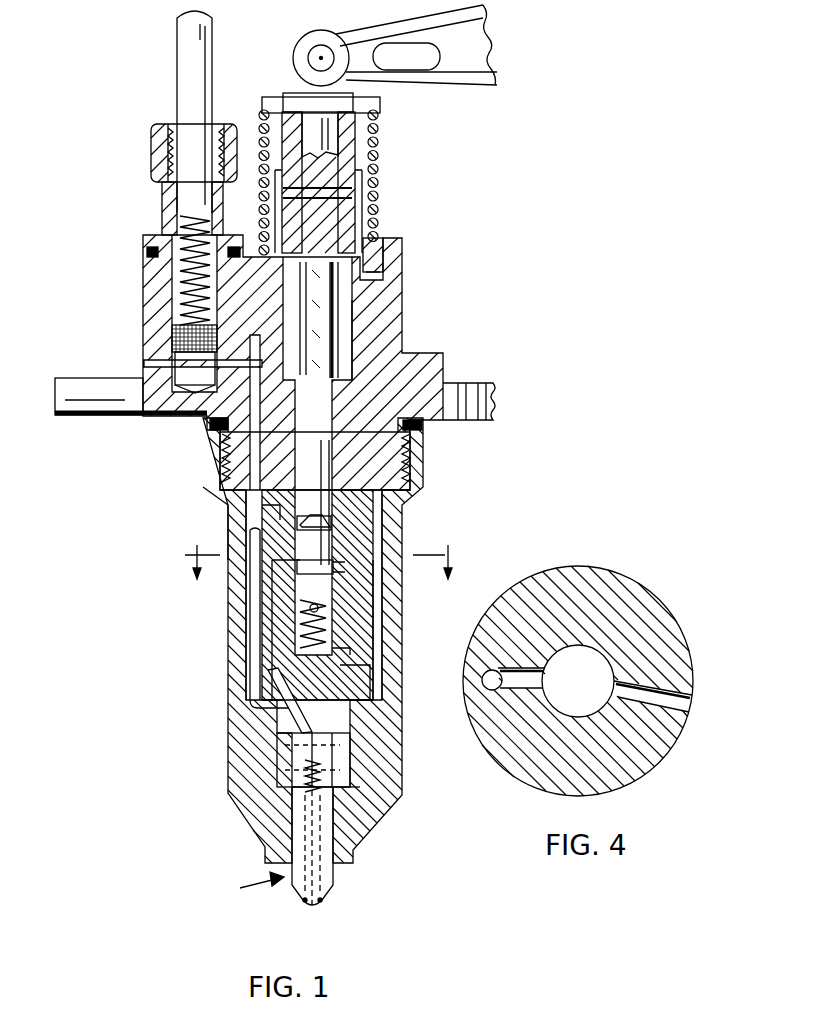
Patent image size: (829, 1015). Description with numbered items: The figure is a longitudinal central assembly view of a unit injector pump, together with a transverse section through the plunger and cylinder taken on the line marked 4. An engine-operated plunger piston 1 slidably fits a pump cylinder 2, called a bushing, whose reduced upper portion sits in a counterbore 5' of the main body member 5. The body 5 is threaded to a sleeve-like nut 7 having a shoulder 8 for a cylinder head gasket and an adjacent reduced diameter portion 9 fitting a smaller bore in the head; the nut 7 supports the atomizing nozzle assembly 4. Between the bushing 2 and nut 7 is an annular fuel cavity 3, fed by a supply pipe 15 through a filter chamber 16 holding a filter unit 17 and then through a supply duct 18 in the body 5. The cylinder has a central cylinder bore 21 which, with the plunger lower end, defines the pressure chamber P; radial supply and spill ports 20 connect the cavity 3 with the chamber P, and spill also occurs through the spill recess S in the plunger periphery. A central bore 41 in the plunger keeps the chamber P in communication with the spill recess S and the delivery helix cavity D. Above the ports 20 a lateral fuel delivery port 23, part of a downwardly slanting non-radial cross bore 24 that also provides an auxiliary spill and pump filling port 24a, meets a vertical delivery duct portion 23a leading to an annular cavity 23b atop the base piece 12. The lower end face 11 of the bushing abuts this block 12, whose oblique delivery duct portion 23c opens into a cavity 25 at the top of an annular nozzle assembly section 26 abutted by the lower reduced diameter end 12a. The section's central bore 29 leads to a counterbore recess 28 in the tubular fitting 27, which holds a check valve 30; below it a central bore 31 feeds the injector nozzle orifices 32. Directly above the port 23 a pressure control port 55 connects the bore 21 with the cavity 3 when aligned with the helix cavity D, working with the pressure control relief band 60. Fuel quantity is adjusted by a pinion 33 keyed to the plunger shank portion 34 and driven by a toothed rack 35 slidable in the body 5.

In FIG. 1, the plunger piston 1 is at (318, 466).
In FIG. 1, the pump cylinder 2 is at (262, 612).
In FIG. 4, the pump cylinder 2 is at (635, 600).
In FIG. 1, the fuel cavity 3 is at (258, 525).
In FIG. 1, the atomizing nozzle assembly 4 is at (316, 722).
In FIG. 1, the main body member 5 is at (308, 362).
In FIG. 1, the counterbore 5' is at (404, 465).
In FIG. 1, the sleeve-like nut 7 is at (213, 465).
In FIG. 1, the shoulder 8 is at (232, 492).
In FIG. 1, the reduced diameter portion 9 is at (238, 540).
In FIG. 1, the lower end face 11 is at (382, 681).
In FIG. 1, the base piece 12 is at (272, 686).
In FIG. 1, the lower reduced diameter end 12a is at (348, 723).
In FIG. 1, the supply pipe 15 is at (190, 75).
In FIG. 1, the filter chamber 16 is at (166, 323).
In FIG. 1, the filter unit 17 is at (172, 342).
In FIG. 1, the supply duct 18 is at (252, 393).
In FIG. 1, the radial supply and spill ports 20 is at (314, 629).
In FIG. 1, the central cylinder bore 21 is at (362, 651).
In FIG. 4, the central cylinder bore 21 is at (562, 716).
In FIG. 1, the lateral fuel delivery port 23 is at (285, 560).
In FIG. 4, the lateral fuel delivery port 23 is at (540, 684).
In FIG. 1, the vertical delivery duct portion 23a is at (272, 622).
In FIG. 4, the vertical delivery duct portion 23a is at (490, 683).
In FIG. 1, the annular cavity 23b is at (300, 661).
In FIG. 1, the oblique delivery duct portion 23c is at (290, 707).
In FIG. 4, the cross bore 24 is at (668, 728).
In FIG. 4, the auxiliary spill and pump filling port 24a is at (618, 700).
In FIG. 1, the cavity 25 is at (262, 752).
In FIG. 1, the annular nozzle assembly section 26 is at (342, 756).
In FIG. 1, the tubular fitting 27 is at (305, 815).
In FIG. 1, the counterbore recess 28 is at (265, 800).
In FIG. 1, the central bore 29 is at (268, 772).
In FIG. 1, the check valve 30 is at (383, 792).
In FIG. 1, the central bore 31 is at (345, 842).
In FIG. 1, the injector nozzle orifices 32 is at (304, 904).
In FIG. 1, the pinion 33 is at (388, 370).
In FIG. 1, the shank portion 34 is at (340, 320).
In FIG. 1, the toothed rack 35 is at (470, 407).
In FIG. 1, the central bore 41 is at (406, 630).
In FIG. 1, the pressure control port 55 is at (270, 513).
In FIG. 1, the pressure control relief band 60 is at (318, 515).
In FIG. 1, the delivery helix cavity D is at (330, 542).
In FIG. 1, the pressure chamber P is at (319, 619).
In FIG. 1, the spill recess S is at (380, 558).